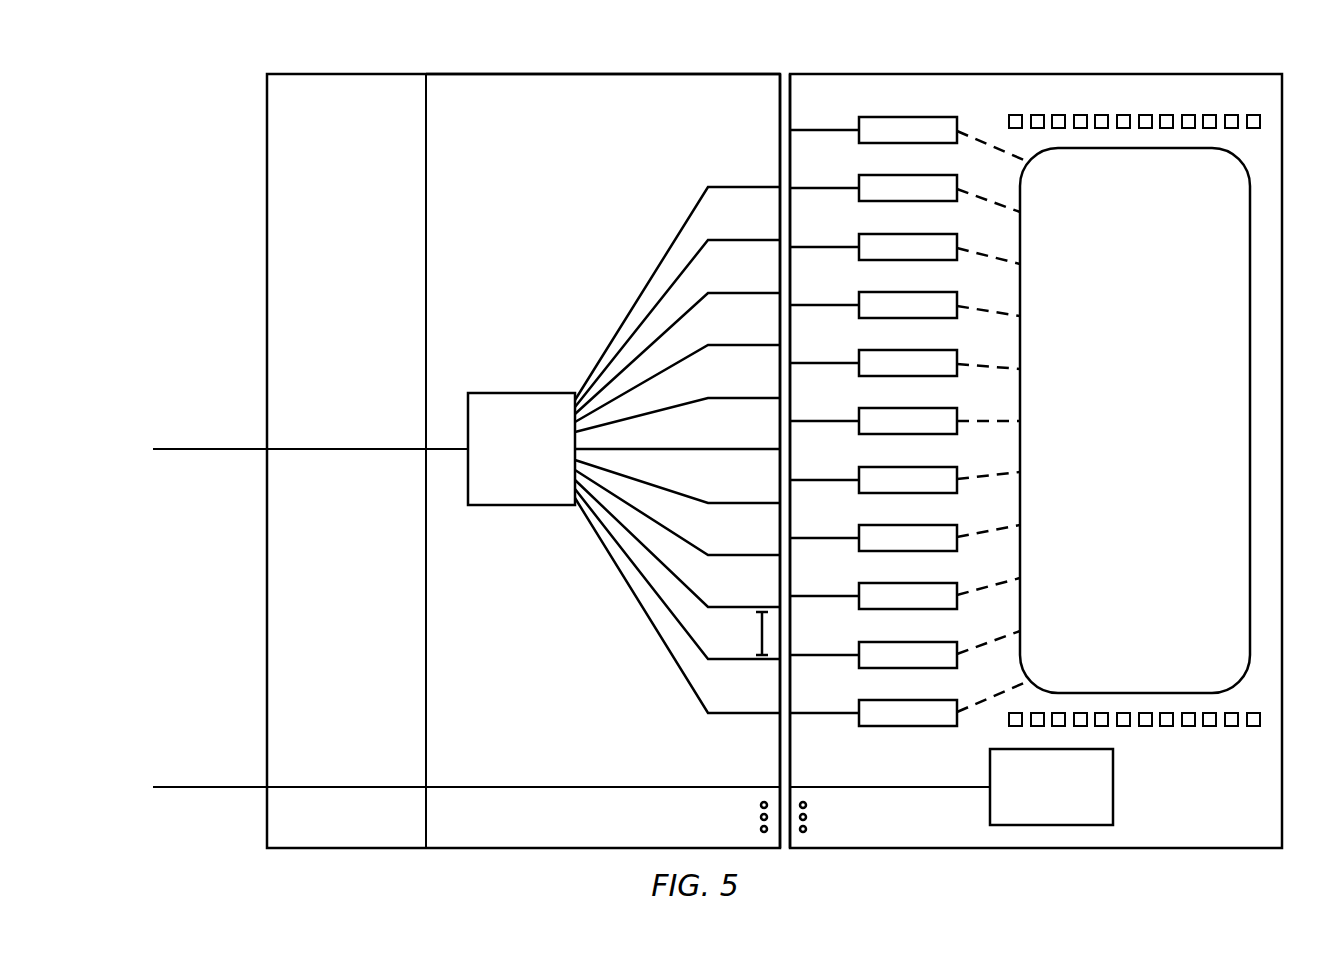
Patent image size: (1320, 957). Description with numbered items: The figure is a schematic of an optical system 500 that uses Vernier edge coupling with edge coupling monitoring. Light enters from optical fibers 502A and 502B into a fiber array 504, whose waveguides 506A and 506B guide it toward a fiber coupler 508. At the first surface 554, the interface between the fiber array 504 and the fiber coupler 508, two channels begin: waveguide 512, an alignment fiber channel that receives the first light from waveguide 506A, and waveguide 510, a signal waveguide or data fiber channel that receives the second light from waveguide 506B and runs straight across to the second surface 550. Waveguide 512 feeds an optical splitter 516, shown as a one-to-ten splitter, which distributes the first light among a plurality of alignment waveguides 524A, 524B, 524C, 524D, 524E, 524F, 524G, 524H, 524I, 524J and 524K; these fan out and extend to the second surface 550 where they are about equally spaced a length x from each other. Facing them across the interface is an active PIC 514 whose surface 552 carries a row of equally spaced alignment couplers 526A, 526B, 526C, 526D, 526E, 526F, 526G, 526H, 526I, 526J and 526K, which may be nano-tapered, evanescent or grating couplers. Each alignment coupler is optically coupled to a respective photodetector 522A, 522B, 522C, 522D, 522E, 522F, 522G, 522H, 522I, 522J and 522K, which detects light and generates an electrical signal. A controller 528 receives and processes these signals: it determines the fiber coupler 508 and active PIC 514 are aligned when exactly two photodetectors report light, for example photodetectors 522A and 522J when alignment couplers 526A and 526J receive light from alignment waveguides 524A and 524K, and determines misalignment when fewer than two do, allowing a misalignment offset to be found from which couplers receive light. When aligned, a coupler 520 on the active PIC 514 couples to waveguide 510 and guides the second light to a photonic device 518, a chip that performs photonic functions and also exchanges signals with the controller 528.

The optical system 500 is at (172, 44).
The optical fiber 502A is at (210, 447).
The optical fiber 502B is at (210, 785).
The fiber array 504 is at (347, 74).
The waveguide 506A is at (345, 447).
The waveguide 506B is at (345, 785).
The fiber coupler 508 is at (603, 74).
The waveguide 510 is at (600, 785).
The waveguide 512 is at (447, 447).
The active PIC 514 is at (1043, 74).
The optical splitter 516 is at (521, 449).
The photonic device 518 is at (1113, 785).
The coupler 520 is at (826, 785).
The photodetector 522A is at (910, 726).
The photodetector 522B is at (910, 668).
The photodetector 522C is at (910, 609).
The photodetector 522D is at (910, 551).
The photodetector 522E is at (910, 493).
The photodetector 522F is at (910, 434).
The photodetector 522G is at (910, 376).
The photodetector 522H is at (910, 318).
The photodetector 522I is at (910, 260).
The photodetector 522J is at (910, 201).
The photodetector 522K is at (910, 143).
The alignment waveguide 524A is at (742, 711).
The alignment waveguide 524B is at (718, 657).
The alignment waveguide 524C is at (742, 605).
The alignment waveguide 524D is at (742, 553).
The alignment waveguide 524E is at (742, 501).
The alignment waveguide 524F is at (742, 447).
The alignment waveguide 524G is at (742, 396).
The alignment waveguide 524H is at (742, 343).
The alignment waveguide 524I is at (742, 291).
The alignment waveguide 524J is at (742, 238).
The alignment waveguide 524K is at (742, 185).
The alignment coupler 526A is at (826, 711).
The alignment coupler 526B is at (826, 653).
The alignment coupler 526C is at (826, 594).
The alignment coupler 526D is at (826, 536).
The alignment coupler 526E is at (826, 478).
The alignment coupler 526F is at (826, 419).
The alignment coupler 526G is at (826, 361).
The alignment coupler 526H is at (826, 303).
The alignment coupler 526I is at (826, 245).
The alignment coupler 526J is at (826, 186).
The alignment coupler 526K is at (834, 128).
The controller 528 is at (1135, 420).
The second surface 550 is at (778, 91).
The surface 552 is at (790, 93).
The first surface 554 is at (427, 103).